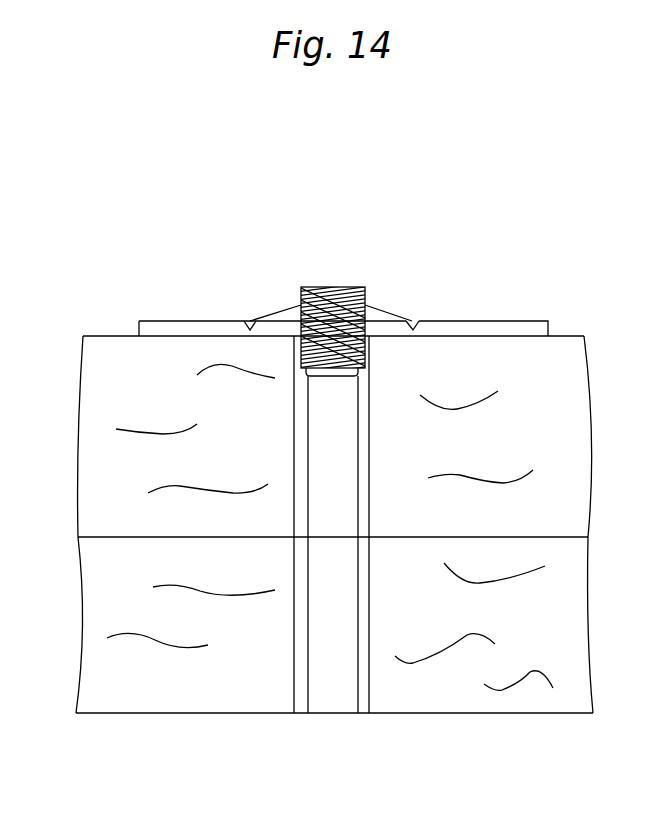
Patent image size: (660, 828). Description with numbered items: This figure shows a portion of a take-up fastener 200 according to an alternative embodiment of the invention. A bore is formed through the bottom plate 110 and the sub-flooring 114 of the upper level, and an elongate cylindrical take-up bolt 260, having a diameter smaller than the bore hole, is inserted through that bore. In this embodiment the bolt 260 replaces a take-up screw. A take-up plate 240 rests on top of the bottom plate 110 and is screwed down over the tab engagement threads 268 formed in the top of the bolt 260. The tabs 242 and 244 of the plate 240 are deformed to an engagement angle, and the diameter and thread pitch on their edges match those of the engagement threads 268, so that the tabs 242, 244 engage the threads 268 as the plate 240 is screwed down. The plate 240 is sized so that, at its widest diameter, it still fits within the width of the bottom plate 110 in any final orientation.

The bottom plate 110 is at (591, 446).
The sub-flooring 114 is at (588, 600).
The take-up plate 240 is at (153, 320).
The tab 242 is at (279, 312).
The tab 244 is at (398, 308).
The take-up bolt 260 is at (347, 484).
The tab engagement threads 268 is at (340, 286).
The take-up fastener 200 is at (331, 304).